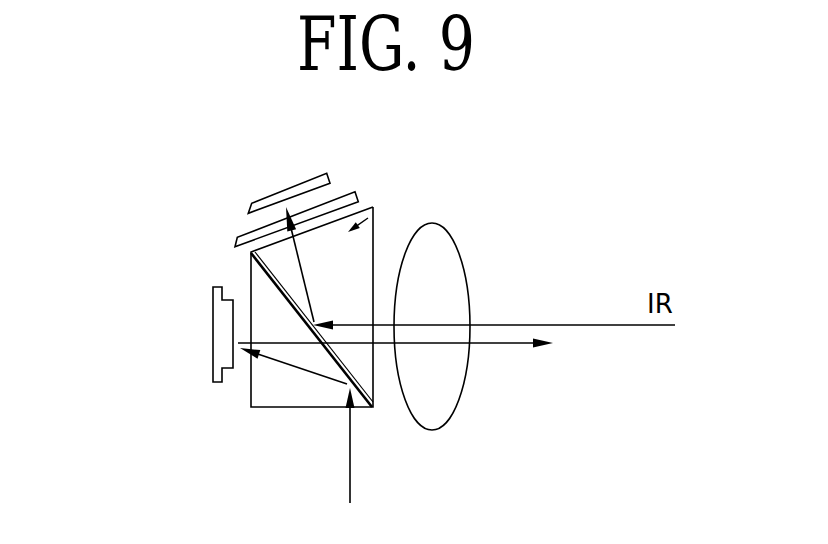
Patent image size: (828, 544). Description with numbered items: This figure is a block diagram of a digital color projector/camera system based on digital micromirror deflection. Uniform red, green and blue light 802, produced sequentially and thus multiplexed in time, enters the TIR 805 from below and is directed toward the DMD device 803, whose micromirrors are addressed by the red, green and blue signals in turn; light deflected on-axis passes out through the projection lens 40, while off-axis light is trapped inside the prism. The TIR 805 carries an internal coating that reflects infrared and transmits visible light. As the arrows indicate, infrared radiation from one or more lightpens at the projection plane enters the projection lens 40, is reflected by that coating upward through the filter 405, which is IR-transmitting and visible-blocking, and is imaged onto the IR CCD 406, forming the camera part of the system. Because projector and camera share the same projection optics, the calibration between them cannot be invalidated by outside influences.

The projection lens 40 is at (467, 372).
The filter 405 is at (233, 243).
The IR CCD 406 is at (277, 189).
The R, G, B light 802 is at (350, 478).
The DMD device 803 is at (212, 325).
The TIR 805 is at (373, 212).